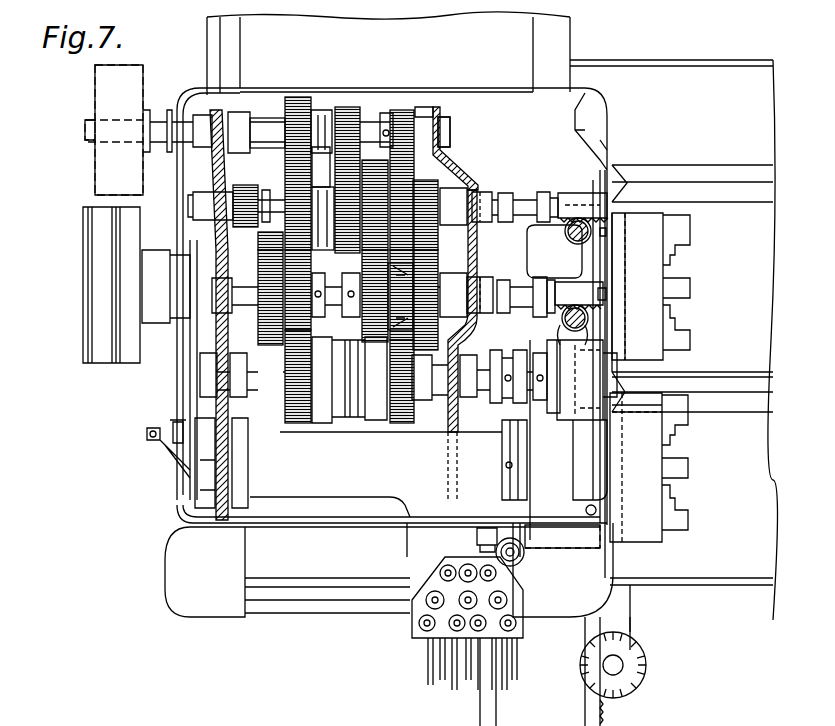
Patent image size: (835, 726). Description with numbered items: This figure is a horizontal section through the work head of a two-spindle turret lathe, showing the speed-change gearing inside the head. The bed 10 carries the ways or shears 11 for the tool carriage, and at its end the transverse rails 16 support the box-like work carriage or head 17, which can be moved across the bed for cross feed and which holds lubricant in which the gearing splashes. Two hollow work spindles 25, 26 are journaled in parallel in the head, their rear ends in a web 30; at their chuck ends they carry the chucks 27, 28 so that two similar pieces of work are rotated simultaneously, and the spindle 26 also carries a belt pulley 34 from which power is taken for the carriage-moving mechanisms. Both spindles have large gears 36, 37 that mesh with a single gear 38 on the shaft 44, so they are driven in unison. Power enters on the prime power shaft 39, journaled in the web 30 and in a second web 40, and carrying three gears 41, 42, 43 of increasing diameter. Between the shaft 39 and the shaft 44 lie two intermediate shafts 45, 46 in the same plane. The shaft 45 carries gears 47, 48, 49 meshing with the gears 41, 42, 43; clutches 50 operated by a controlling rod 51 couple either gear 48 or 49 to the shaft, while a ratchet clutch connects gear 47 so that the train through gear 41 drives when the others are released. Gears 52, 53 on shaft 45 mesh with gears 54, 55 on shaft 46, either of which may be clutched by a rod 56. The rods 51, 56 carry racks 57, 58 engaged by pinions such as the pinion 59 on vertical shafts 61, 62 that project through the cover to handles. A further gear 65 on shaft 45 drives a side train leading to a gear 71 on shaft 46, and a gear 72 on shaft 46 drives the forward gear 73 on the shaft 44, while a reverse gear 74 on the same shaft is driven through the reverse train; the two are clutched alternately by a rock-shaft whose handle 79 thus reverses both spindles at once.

The bed 10 is at (715, 588).
The ways or shears 11 is at (752, 195).
The transverse guides or rails 16 is at (232, 62).
The work carriage or head 17 is at (600, 142).
The work-carrying spindle 25 is at (358, 497).
The work-carrying spindle 26 is at (490, 262).
The chuck 27 is at (655, 503).
The chuck 28 is at (673, 312).
The web 30 is at (230, 307).
The belt pulley 34 is at (101, 350).
The large gear 36 is at (598, 548).
The large gear 37 is at (558, 335).
The gear 38 is at (565, 420).
The prime power shaft 39 is at (282, 98).
The second web 40 is at (470, 185).
The gear 41 is at (405, 110).
The gear 42 is at (325, 190).
The gear 43 is at (315, 95).
The shaft 44 is at (487, 388).
The intermediate shaft 45 is at (262, 190).
The intermediate shaft 46 is at (228, 303).
The gear 47 is at (420, 185).
The gear 48 is at (425, 180).
The gear 49 is at (258, 140).
The clutches 50 is at (375, 160).
The controlling rod 51 is at (556, 195).
The gear 52 is at (440, 150).
The gear 53 is at (448, 185).
The gear 54 is at (360, 320).
The gear 55 is at (470, 295).
The rod 56 is at (553, 280).
The rack 57 is at (585, 200).
The rack 58 is at (585, 290).
The pinion 59 is at (592, 233).
The vertical shaft 61 is at (606, 294).
The vertical shaft 62 is at (590, 318).
The gear 65 is at (232, 193).
The gear 71 is at (262, 256).
The gear 72 is at (272, 345).
The gear 73 is at (298, 423).
The gear 74 is at (398, 423).
The handle 79 is at (477, 545).